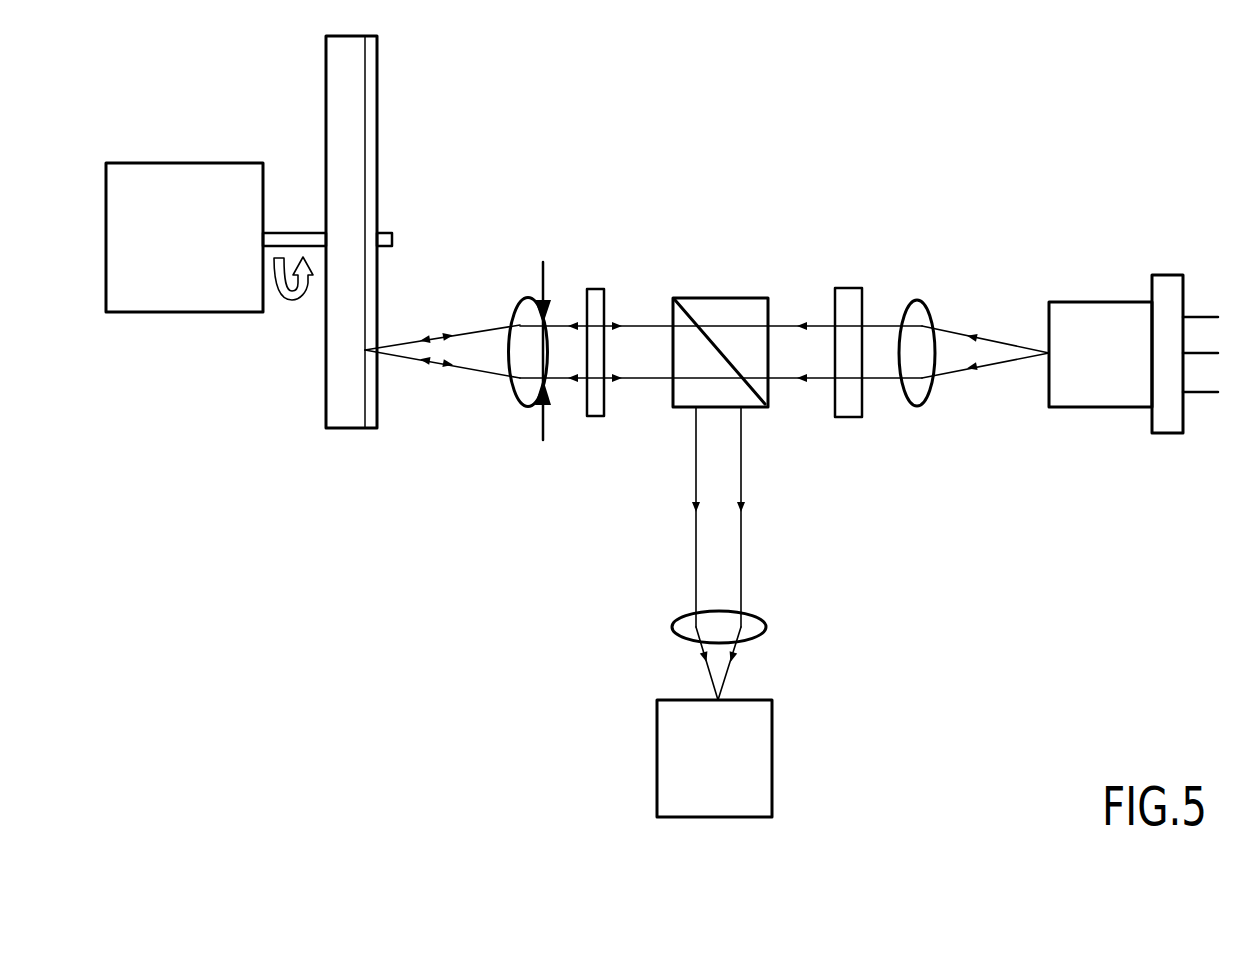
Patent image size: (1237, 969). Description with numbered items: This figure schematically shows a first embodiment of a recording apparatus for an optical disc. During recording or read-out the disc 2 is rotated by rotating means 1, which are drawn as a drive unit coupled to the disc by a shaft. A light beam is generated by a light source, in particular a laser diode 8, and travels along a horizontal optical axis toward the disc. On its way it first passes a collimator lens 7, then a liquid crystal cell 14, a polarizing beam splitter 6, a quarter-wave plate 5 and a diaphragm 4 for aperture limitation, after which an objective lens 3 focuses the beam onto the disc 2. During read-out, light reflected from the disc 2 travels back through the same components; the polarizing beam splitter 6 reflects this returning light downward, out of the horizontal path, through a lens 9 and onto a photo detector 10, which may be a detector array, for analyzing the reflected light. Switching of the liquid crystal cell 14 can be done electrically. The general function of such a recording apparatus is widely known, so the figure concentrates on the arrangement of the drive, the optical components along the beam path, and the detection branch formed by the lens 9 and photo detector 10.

The rotating means 1 is at (186, 163).
The disc 2 is at (378, 101).
The objective lens 3 is at (529, 298).
The diaphragm 4 is at (545, 282).
The quarter-wave plate 5 is at (597, 289).
The polarizing beam splitter 6 is at (720, 298).
The collimator lens 7 is at (915, 300).
The laser diode 8 is at (1108, 302).
The lens 9 is at (766, 622).
The photo detector 10 is at (772, 759).
The liquid crystal cell 14 is at (848, 288).